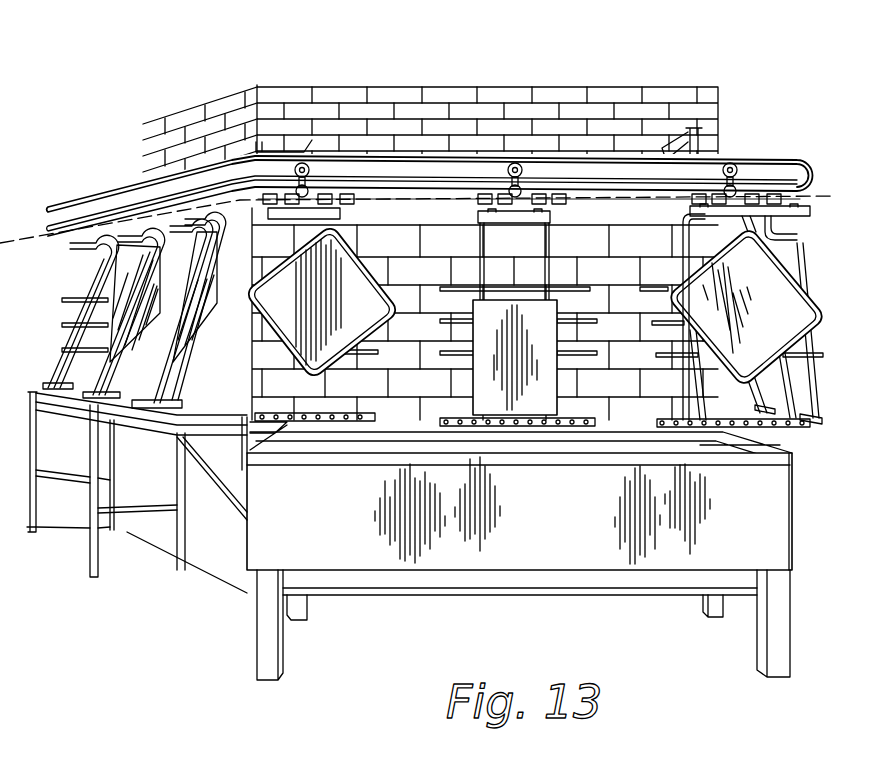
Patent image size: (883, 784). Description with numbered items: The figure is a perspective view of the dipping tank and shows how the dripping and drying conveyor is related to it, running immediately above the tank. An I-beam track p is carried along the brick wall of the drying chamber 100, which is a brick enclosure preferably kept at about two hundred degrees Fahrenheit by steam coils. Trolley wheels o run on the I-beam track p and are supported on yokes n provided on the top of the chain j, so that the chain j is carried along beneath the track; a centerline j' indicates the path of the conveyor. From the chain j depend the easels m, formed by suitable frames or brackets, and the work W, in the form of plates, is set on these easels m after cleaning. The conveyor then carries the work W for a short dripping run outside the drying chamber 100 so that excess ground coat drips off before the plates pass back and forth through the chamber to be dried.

The drying chamber 100 is at (722, 108).
The I-beam track p is at (372, 158).
The chain j is at (534, 130).
The conveyor centerline j' is at (424, 219).
The yokes n is at (293, 184).
The trolley wheels o is at (318, 171).
The easels m is at (57, 352).
The work W is at (468, 315).